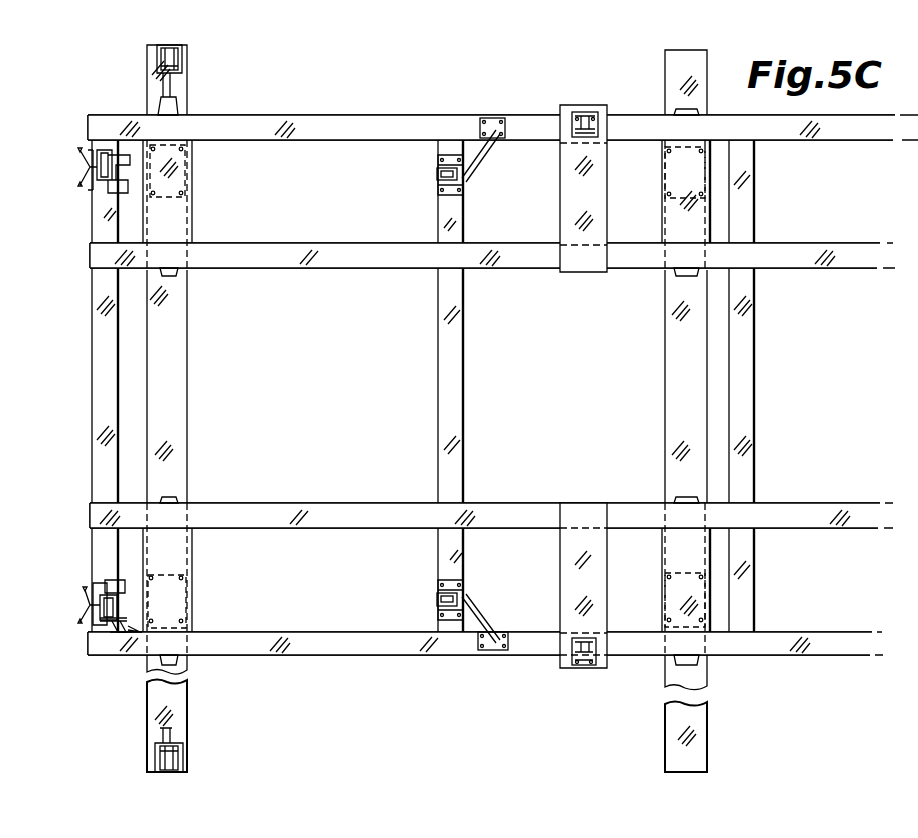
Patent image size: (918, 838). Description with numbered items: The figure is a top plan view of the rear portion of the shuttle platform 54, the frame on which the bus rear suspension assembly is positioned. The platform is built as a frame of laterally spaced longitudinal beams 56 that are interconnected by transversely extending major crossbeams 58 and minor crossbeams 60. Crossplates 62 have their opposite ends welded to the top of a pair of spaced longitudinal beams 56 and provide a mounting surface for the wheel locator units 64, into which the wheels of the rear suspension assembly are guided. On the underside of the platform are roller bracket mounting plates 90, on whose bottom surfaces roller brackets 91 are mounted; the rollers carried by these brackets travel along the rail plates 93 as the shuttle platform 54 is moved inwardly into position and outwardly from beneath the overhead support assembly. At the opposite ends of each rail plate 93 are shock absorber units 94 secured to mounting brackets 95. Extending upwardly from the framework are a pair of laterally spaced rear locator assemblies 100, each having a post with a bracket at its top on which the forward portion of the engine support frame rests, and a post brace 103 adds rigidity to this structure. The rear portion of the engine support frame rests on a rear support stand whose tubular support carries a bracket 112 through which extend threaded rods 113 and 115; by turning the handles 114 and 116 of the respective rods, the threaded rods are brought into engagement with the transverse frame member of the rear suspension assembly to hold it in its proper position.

The shuttle platform 54 is at (320, 662).
The longitudinal beams 56 is at (792, 140).
The major crossbeams 58 is at (98, 362).
The minor crossbeams 60 is at (97, 213).
The crossplates 62 is at (563, 545).
The front wheel locator unit 64 is at (588, 105).
The roller bracket mounting plates 90 is at (183, 230).
The roller brackets 91 is at (190, 177).
The rail plates 93 is at (185, 700).
The shock absorber units 94 is at (190, 60).
The mounting brackets 95 is at (157, 62).
The rear locator assemblies 100 is at (435, 175).
The post brace 103 is at (478, 148).
The bracket 112 is at (108, 638).
The threaded rod 113 is at (127, 615).
The handle 114 is at (113, 656).
The threaded rod 115 is at (108, 158).
The handle 116 is at (78, 161).